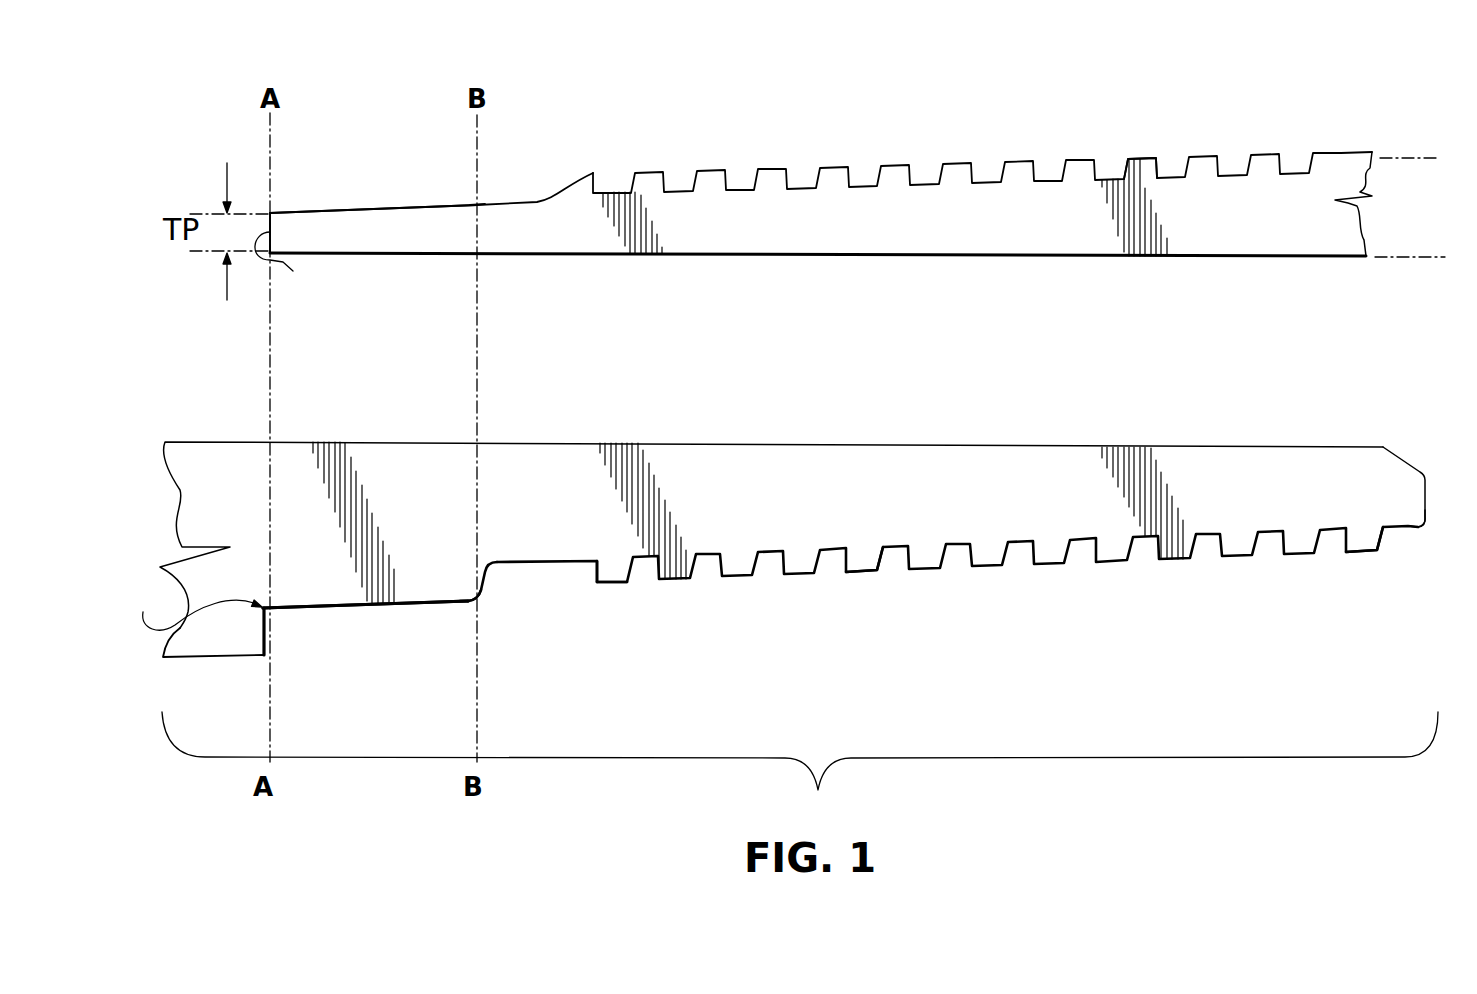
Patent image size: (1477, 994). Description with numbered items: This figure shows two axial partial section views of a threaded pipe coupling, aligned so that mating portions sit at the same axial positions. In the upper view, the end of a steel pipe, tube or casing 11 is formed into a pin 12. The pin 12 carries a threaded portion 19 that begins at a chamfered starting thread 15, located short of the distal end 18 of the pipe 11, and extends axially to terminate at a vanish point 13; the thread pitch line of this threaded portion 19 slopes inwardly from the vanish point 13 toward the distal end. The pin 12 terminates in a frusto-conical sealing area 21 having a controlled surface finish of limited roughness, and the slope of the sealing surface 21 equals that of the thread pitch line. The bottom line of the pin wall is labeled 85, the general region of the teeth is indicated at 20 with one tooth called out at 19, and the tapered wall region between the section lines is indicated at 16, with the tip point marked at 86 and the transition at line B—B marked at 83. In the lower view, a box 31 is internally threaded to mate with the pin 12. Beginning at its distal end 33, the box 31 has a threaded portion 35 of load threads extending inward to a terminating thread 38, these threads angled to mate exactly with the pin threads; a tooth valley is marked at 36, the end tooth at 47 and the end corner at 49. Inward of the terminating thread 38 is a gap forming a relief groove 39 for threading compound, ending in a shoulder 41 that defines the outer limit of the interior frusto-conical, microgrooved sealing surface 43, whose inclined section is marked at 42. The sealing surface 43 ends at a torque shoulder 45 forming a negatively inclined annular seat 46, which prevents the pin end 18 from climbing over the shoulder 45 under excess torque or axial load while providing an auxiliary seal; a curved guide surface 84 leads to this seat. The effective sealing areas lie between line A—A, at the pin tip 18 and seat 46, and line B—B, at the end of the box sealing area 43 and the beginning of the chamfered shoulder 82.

The pipe 11 is at (1420, 262).
The pin 12 is at (931, 240).
The vanish point 13 is at (1335, 155).
The chamfered starting thread 15 is at (578, 178).
The tapered section 16 is at (390, 196).
The distal end 18 is at (287, 261).
The threaded portion 19 is at (1143, 160).
The toothed surface 20 is at (833, 151).
The frusto-conical sealing area 21 is at (313, 205).
The box 31 is at (855, 521).
The distal end 33 is at (1430, 470).
The threaded portion 35 is at (1117, 563).
The tooth valley 36 is at (860, 590).
The terminating thread 38 is at (605, 584).
The relief groove 39 is at (565, 564).
The shoulder 41 is at (490, 578).
The inclined section 42 is at (445, 614).
The sealing surface 43 is at (390, 609).
The torque shoulder 45 is at (222, 656).
The annular seat 46 is at (267, 622).
The end tooth 47 is at (1388, 532).
The end corner 49 is at (1425, 527).
The chamfered shoulder 82 is at (486, 613).
The transition point B 83 is at (484, 197).
The curved guide surface 84 is at (196, 607).
The bottom surface 85 is at (818, 256).
The tip point A 86 is at (262, 207).